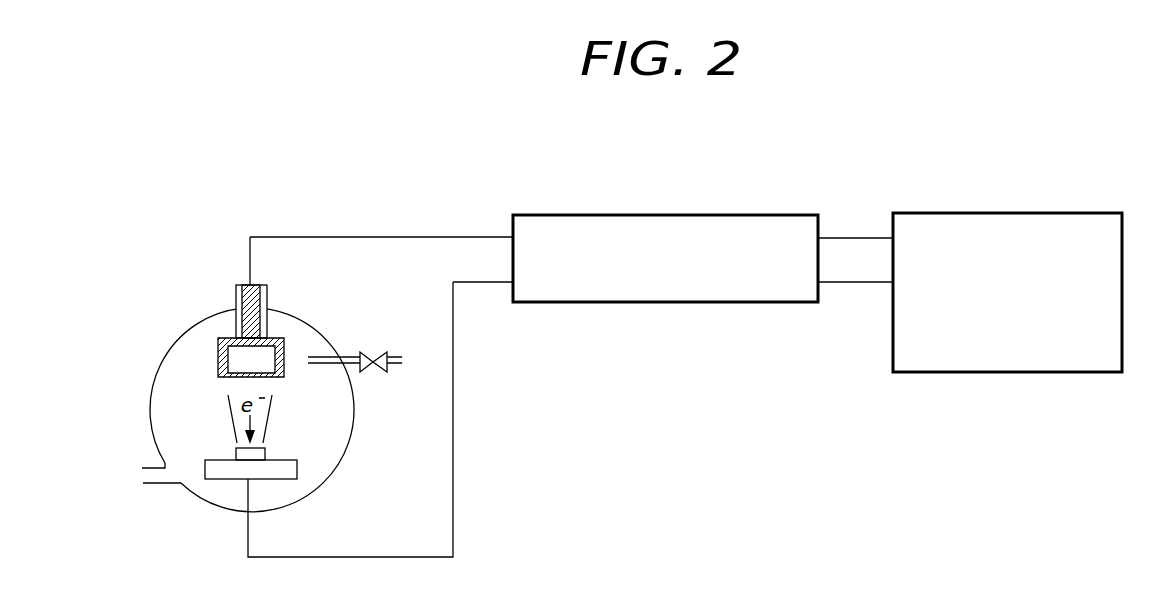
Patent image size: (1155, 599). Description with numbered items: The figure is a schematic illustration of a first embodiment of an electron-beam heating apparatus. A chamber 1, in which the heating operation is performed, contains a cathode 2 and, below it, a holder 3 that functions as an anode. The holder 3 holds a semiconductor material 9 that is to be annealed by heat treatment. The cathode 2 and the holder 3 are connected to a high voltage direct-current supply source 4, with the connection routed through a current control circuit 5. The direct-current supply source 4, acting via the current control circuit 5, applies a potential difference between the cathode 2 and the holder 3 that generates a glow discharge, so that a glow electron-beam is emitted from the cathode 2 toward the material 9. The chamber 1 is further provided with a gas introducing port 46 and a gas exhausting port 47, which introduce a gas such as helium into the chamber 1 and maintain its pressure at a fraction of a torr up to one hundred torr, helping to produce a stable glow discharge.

The chamber 1 is at (198, 519).
The cathode 2 is at (232, 357).
The holder 3 is at (207, 458).
The direct-current supply source 4 is at (947, 372).
The current control circuit 5 is at (577, 303).
The semiconductor material 9 is at (268, 448).
The gas introducing port 46 is at (380, 378).
The gas exhausting port 47 is at (140, 461).